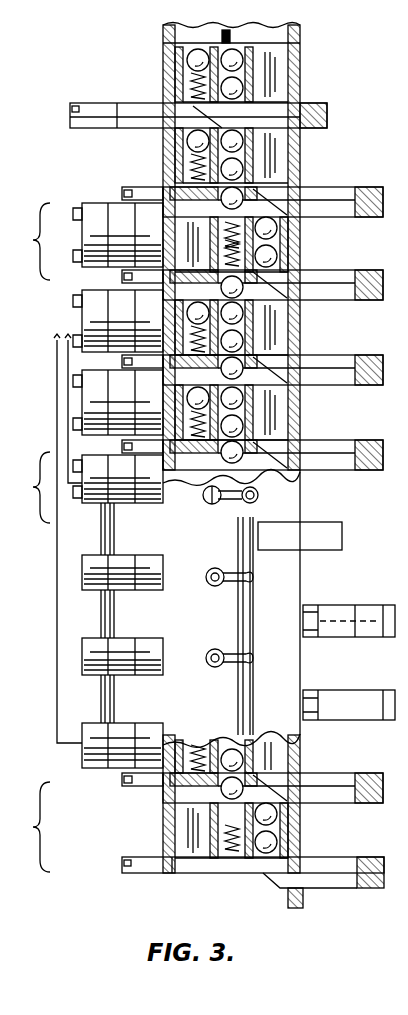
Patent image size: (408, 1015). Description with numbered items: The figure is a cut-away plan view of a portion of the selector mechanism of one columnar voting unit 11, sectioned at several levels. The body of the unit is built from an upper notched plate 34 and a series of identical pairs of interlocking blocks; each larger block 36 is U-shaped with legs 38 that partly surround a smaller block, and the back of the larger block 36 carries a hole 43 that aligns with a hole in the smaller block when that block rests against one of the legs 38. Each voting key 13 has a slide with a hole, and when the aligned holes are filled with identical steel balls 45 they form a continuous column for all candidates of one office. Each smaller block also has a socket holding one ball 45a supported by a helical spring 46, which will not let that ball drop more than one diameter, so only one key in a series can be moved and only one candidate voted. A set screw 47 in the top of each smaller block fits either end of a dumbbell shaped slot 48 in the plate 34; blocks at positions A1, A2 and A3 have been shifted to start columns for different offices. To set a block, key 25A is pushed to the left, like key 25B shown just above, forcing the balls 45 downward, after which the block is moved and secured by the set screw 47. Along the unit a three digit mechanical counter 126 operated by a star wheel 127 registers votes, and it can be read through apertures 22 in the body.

The larger interlocking block 36 is at (190, 30).
The hole in larger block 43 is at (228, 40).
The socket ball 45a is at (186, 60).
The legs of larger block 38 is at (164, 82).
The steel balls 45 is at (244, 62).
The key pushed to the left 25B is at (328, 119).
The key in block assembly being set 25A is at (376, 192).
The helical spring 46 is at (188, 178).
The three digit mechanical counter 126 is at (100, 205).
The star wheel 127 is at (88, 292).
The columnar unit 11 is at (48, 566).
The voting key 13 is at (312, 526).
The set screw 47 is at (257, 498).
The dumbbell shaped slot 48 is at (240, 566).
The upper notched plate 34 is at (197, 616).
The apertures 22 is at (140, 672).
The block position A1 is at (30, 241).
The block position A2 is at (28, 487).
The block position A3 is at (27, 827).